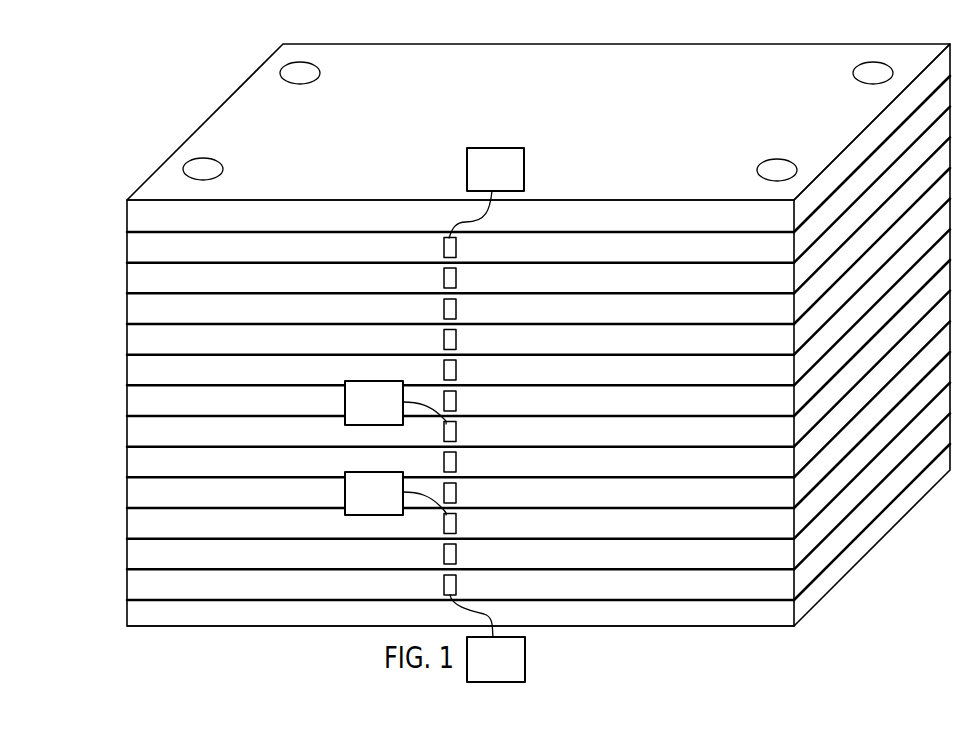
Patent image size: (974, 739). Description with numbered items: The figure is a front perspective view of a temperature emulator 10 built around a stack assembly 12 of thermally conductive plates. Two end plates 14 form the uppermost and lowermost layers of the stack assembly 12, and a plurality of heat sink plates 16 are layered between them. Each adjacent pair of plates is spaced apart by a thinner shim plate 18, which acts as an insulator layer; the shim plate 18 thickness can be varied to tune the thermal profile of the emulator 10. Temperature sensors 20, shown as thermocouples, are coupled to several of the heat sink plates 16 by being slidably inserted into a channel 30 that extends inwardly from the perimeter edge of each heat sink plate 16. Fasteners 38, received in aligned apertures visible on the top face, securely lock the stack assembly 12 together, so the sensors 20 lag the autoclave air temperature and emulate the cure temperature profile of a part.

The emulator 10 is at (190, 90).
The stack assembly 12 is at (873, 572).
The end plate 14 is at (127, 216).
The heat sink plate 16 is at (127, 248).
The shim plate 18 is at (160, 230).
The temperature sensor 20 is at (512, 148).
The channel 30 is at (456, 277).
The fastener 38 is at (300, 74).